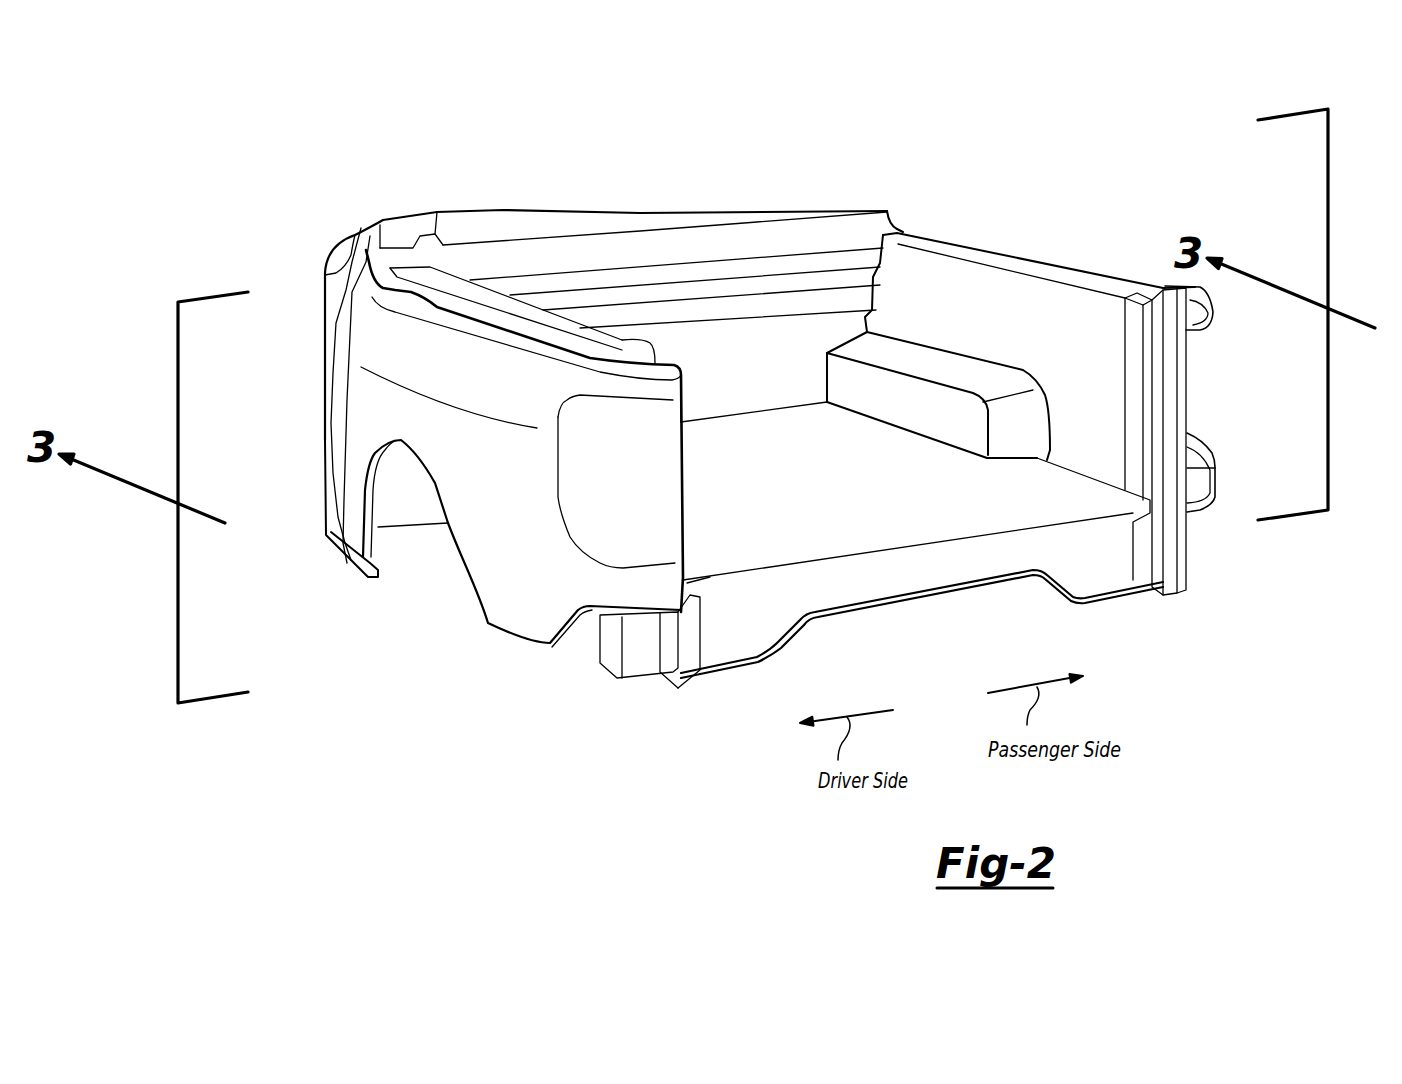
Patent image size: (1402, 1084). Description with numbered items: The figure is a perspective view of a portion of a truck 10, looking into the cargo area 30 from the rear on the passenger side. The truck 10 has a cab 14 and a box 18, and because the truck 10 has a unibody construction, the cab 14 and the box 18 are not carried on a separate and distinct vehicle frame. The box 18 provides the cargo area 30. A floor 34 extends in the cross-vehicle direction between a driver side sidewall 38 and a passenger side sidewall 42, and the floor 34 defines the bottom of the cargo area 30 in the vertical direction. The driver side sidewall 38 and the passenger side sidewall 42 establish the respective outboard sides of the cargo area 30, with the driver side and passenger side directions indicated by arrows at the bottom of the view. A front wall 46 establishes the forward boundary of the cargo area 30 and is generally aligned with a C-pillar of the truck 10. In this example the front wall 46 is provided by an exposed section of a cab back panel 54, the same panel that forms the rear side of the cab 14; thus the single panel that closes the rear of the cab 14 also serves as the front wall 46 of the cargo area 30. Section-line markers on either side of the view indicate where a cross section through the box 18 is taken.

The truck 10 is at (1106, 145).
The cab 14 is at (413, 224).
The box 18 is at (1090, 262).
The cargo area 30 is at (762, 330).
The floor 34 is at (920, 523).
The driver side sidewall 38 is at (508, 579).
The passenger side sidewall 42 is at (1190, 358).
The front wall 46 is at (693, 348).
The cab back panel 54 is at (737, 378).